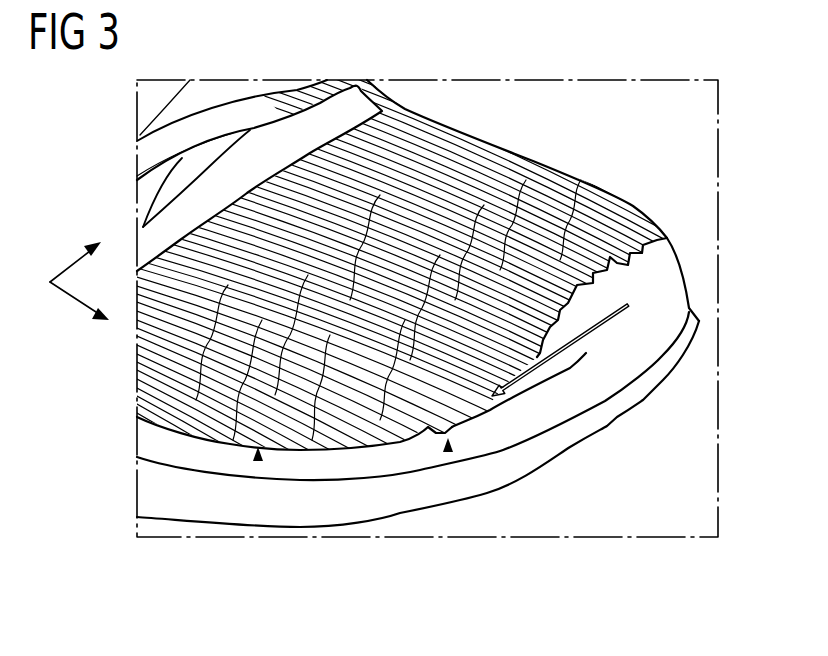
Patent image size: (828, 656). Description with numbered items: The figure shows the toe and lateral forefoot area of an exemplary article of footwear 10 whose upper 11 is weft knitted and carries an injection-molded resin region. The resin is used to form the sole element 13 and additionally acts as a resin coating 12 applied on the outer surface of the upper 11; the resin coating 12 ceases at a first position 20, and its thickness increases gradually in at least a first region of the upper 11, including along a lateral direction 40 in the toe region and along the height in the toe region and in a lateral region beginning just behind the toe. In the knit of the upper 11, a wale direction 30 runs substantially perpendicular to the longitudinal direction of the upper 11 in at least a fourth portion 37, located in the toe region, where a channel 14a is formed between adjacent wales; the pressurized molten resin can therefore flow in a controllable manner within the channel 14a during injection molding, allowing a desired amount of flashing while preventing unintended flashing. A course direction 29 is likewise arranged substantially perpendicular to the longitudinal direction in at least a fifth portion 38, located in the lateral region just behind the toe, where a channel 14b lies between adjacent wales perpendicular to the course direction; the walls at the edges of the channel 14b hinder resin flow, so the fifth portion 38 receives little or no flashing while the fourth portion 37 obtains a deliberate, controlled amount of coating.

The article of footwear 10 is at (106, 183).
The upper 11 is at (160, 377).
The resin coating 12 is at (153, 445).
The sole element 13 is at (153, 495).
The channel 14a is at (474, 400).
The channel 14b is at (250, 437).
The first position 20 is at (343, 451).
The course direction 29 is at (62, 272).
The wale direction 30 is at (70, 296).
The fourth portion 37 is at (447, 449).
The fifth portion 38 is at (258, 458).
The lateral direction 40 is at (585, 352).